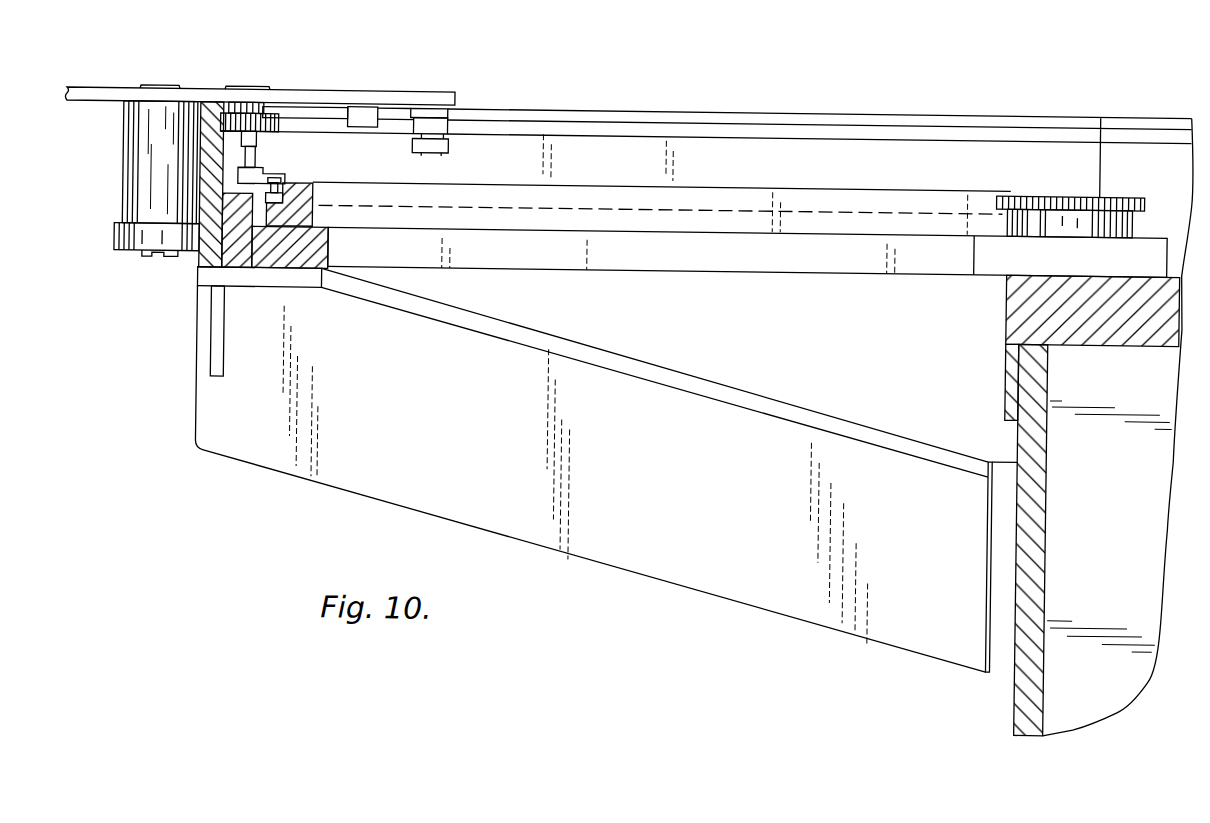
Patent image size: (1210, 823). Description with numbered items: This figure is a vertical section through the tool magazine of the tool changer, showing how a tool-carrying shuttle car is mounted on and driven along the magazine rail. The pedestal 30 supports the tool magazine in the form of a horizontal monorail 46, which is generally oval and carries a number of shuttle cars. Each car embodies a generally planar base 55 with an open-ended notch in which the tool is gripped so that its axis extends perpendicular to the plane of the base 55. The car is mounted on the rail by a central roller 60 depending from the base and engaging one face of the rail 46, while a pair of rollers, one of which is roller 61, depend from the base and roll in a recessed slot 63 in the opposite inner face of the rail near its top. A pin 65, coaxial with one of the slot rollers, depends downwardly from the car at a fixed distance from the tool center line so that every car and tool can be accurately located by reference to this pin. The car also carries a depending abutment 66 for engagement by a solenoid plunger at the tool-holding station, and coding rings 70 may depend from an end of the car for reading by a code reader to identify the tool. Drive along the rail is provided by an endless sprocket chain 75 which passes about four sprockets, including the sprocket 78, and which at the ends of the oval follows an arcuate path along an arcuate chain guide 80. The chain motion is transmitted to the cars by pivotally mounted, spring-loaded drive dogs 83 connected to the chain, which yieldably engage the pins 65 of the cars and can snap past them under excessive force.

The pedestal 30 is at (1007, 702).
The horizontal monorail 46 is at (693, 111).
The base 55 is at (303, 99).
The central roller 60 is at (127, 246).
The roller 61 is at (245, 121).
The recessed slot 63 is at (570, 126).
The pin 65 is at (253, 160).
The depending abutment 66 is at (362, 110).
The coding rings 70 is at (445, 119).
The endless sprocket chain 75 is at (281, 186).
The sprocket 78 is at (1117, 201).
The arcuate chain guide 80 is at (642, 195).
The drive dog 83 is at (238, 180).